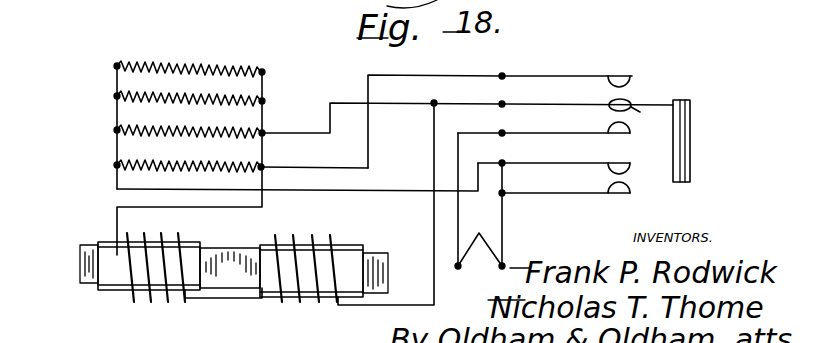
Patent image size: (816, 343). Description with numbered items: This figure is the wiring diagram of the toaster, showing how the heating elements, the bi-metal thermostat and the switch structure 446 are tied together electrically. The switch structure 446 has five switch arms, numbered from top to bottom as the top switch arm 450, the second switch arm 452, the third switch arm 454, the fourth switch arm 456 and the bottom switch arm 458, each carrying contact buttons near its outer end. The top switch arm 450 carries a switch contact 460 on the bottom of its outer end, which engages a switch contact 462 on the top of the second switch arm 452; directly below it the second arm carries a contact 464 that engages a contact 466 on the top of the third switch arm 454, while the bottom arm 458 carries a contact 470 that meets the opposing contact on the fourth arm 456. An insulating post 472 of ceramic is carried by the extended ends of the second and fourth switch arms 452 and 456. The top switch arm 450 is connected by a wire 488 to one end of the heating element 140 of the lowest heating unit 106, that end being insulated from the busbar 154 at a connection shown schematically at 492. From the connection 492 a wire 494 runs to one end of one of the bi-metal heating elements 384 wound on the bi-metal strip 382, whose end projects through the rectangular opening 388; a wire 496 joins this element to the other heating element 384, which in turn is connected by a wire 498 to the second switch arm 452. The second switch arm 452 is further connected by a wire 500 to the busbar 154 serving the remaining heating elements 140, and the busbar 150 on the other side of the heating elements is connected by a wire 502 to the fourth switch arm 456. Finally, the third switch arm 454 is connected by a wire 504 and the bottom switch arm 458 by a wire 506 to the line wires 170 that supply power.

The heating unit 106 is at (169, 111).
The heating element 140 is at (217, 163).
The busbar 150 is at (117, 80).
The busbar 154 is at (264, 88).
The line wires 170 is at (465, 220).
The bi-metal strip 382 is at (223, 253).
The heating elements 384 is at (135, 293).
The rectangular opening 388 is at (235, 0).
The switch structure 446 is at (644, 96).
The top switch arm 450 is at (563, 75).
The second switch arm 452 is at (581, 104).
The third switch arm 454 is at (566, 133).
The fourth switch arm 456 is at (580, 165).
The fifth switch arm 458 is at (546, 193).
The switch contact 460 is at (634, 85).
The switch contact 462 is at (628, 101).
The contact 464 is at (630, 110).
The contact 466 is at (633, 133).
The contact 470 is at (631, 190).
The insulating post 472 is at (630, 167).
The wire 488 is at (438, 75).
The connection 492 is at (262, 167).
The wire 494 is at (143, 208).
The wire 496 is at (232, 298).
The wire 498 is at (432, 160).
The wire 500 is at (350, 101).
The wire 502 is at (295, 191).
The wire 504 is at (460, 154).
The wire 506 is at (502, 238).